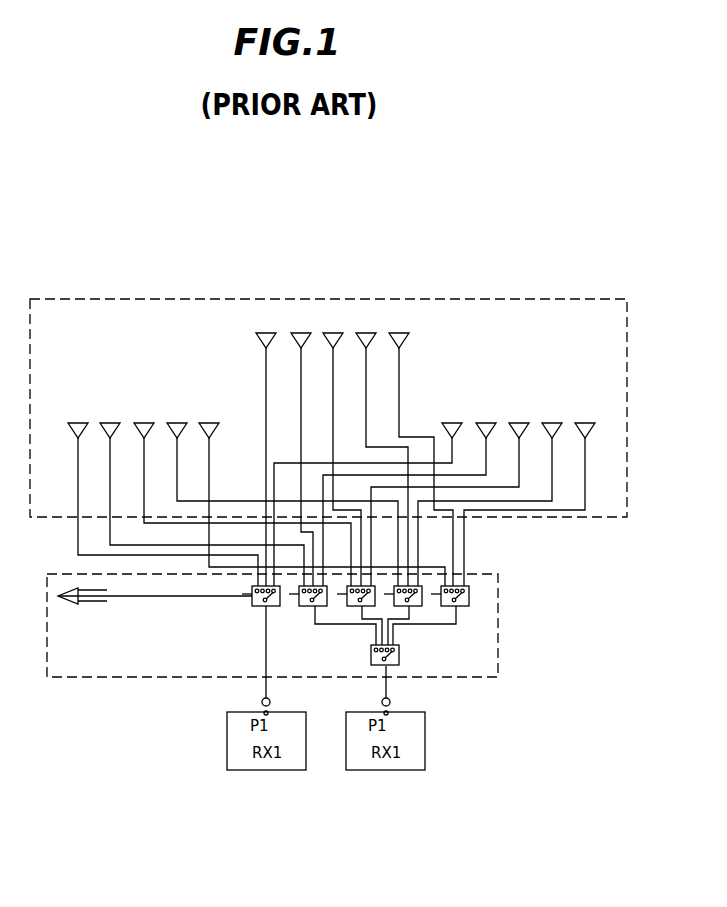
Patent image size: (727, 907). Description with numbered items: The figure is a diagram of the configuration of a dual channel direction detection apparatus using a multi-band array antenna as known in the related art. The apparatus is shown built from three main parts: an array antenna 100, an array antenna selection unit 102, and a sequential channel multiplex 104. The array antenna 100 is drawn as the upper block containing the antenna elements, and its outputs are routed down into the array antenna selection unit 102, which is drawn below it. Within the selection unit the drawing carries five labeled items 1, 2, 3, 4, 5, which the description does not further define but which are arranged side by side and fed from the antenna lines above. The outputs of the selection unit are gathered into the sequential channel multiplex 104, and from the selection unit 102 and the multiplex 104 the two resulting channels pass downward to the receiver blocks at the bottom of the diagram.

The array antenna 100 is at (627, 340).
The array antenna selection unit 102 is at (294, 625).
The sequential channel multiplex 104 is at (399, 651).
The first switch 1 is at (260, 606).
The second switch 2 is at (308, 606).
The third switch 3 is at (356, 606).
The fourth switch 4 is at (402, 602).
The fifth switch 5 is at (448, 606).